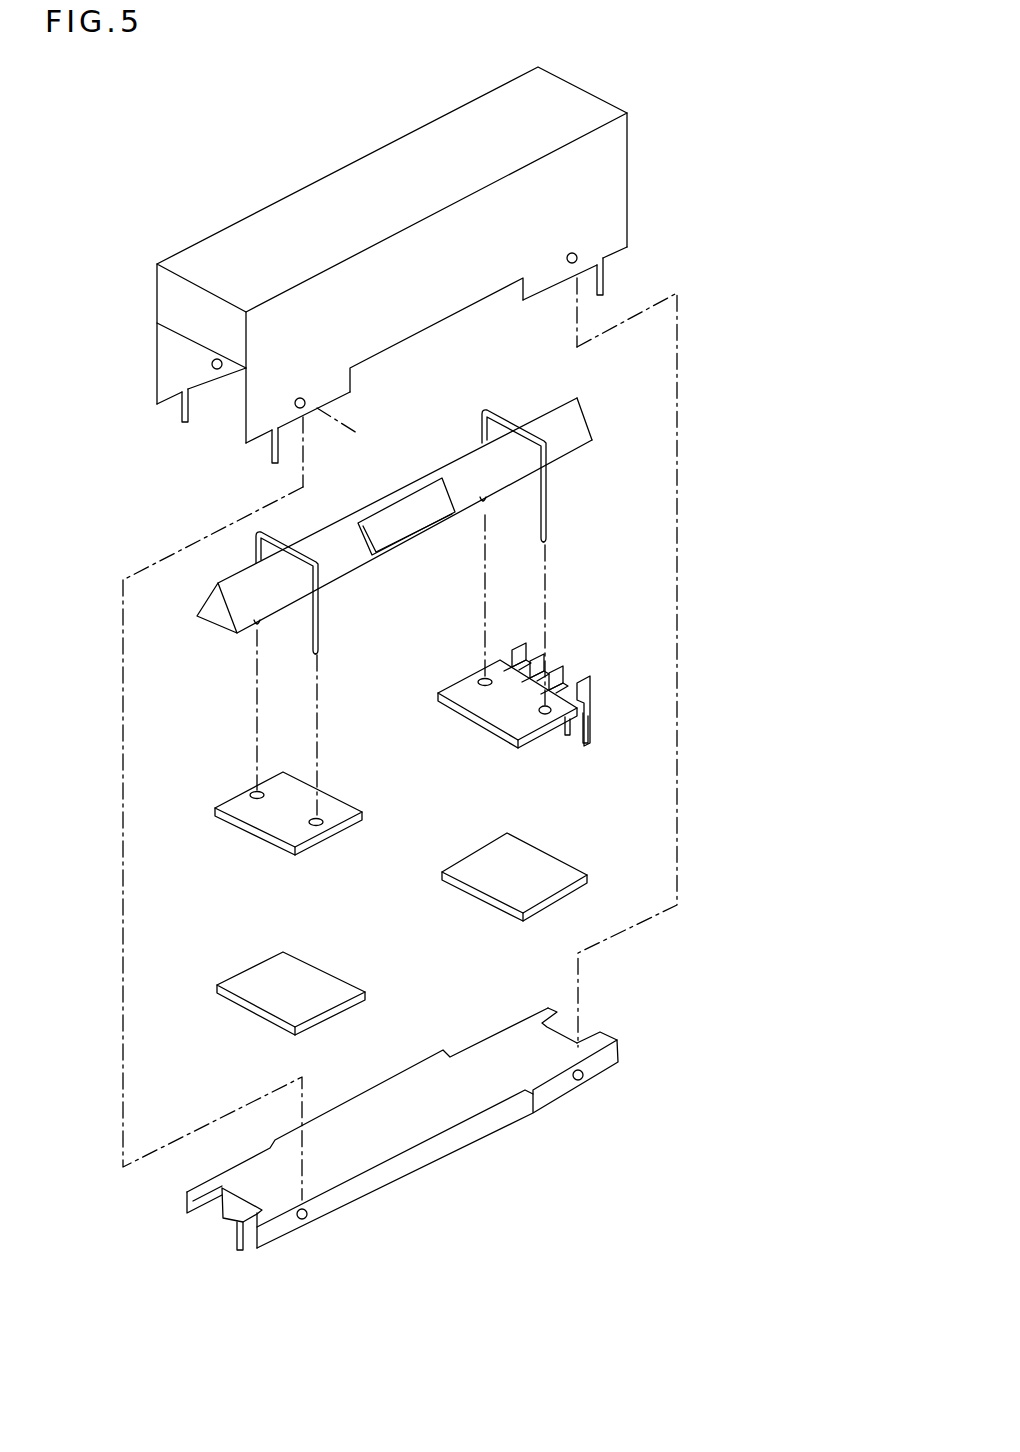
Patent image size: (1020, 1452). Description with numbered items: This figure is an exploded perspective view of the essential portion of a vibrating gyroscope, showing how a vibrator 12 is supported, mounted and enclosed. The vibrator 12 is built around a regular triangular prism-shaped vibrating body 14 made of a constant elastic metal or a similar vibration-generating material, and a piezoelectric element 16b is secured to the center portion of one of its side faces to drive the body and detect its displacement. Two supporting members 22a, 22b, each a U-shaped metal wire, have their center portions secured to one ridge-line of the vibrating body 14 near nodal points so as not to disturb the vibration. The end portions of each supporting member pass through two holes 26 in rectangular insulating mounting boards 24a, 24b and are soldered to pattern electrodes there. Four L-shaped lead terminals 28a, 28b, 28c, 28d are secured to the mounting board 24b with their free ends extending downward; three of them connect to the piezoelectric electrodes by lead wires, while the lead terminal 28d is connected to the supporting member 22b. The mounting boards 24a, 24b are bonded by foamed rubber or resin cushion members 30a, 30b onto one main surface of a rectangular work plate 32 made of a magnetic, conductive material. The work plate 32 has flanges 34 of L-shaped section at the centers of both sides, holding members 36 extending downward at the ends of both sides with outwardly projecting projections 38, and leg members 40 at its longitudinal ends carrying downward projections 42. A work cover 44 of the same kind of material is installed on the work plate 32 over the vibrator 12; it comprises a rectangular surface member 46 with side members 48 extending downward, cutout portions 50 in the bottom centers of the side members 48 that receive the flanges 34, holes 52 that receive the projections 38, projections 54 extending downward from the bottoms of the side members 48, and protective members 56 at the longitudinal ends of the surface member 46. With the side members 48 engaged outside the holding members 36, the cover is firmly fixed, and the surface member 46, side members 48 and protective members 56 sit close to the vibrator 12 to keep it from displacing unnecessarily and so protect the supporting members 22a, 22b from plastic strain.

The vibrator 12 is at (423, 502).
The vibrating body 14 is at (580, 437).
The piezoelectric element 16b is at (415, 522).
The supporting member 22a is at (320, 623).
The supporting member 22b is at (548, 503).
The mounting board 24a is at (283, 823).
The mounting board 24b is at (543, 685).
The hole 26 is at (480, 680).
The lead terminal 28a is at (524, 655).
The lead terminal 28b is at (546, 665).
The lead terminal 28c is at (568, 678).
The lead terminal 28d is at (592, 688).
The cushion member 30a is at (265, 996).
The cushion member 30b is at (500, 890).
The work plate 32 is at (390, 1129).
The flange 34 is at (350, 1098).
The holding member 36 is at (507, 1030).
The projection 38 is at (586, 1080).
The leg member 40 is at (573, 1040).
The projection 42 is at (240, 1252).
The work cover 44 is at (387, 278).
The surface member 46 is at (385, 168).
The side member 48 is at (605, 170).
The cutout portion 50 is at (437, 333).
The hole 52 is at (564, 265).
The projection 54 is at (605, 260).
The protective member 56 is at (600, 93).